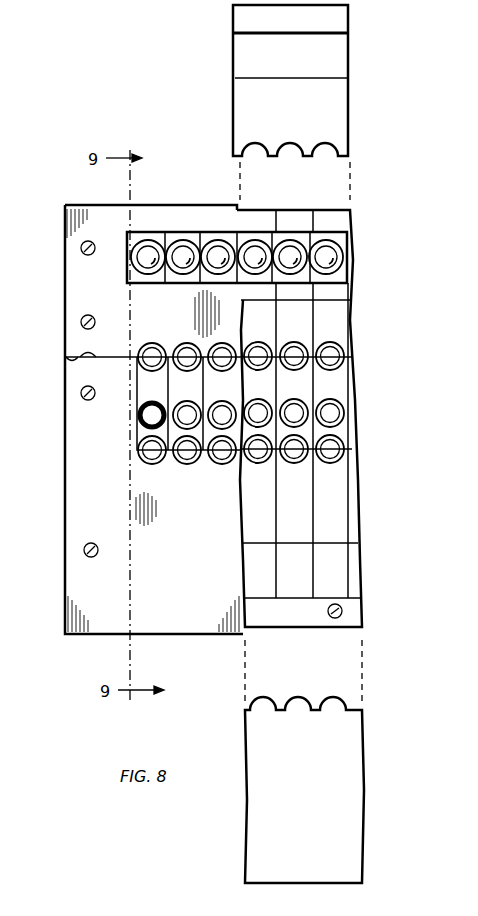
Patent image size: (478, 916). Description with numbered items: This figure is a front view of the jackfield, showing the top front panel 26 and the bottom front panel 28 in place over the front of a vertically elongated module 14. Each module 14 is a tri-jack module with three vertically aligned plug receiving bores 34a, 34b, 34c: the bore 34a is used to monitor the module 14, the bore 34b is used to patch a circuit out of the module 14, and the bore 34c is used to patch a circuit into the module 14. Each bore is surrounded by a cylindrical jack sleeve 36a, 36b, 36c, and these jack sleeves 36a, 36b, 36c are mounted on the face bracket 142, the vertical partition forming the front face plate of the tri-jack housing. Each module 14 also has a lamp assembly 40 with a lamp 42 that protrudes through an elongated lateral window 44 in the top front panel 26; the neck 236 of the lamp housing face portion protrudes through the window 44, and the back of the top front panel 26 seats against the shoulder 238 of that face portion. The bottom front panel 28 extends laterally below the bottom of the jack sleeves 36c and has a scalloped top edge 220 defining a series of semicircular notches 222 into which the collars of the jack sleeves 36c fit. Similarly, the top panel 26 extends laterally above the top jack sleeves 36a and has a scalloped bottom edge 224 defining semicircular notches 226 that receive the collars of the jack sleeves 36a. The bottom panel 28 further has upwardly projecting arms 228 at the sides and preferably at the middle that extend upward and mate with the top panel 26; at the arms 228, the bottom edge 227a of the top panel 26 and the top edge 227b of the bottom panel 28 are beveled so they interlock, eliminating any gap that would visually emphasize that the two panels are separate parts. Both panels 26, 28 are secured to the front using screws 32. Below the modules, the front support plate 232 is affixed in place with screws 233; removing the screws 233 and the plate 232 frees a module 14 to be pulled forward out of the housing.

The module 14 is at (330, 517).
The top front panel 26 is at (333, 97).
The bottom front panel 28 is at (92, 467).
The screws 32 is at (96, 251).
The plug receiving bore 34a is at (332, 358).
The plug receiving bore 34b is at (332, 418).
The plug receiving bore 34c is at (332, 453).
The jack sleeve 36a is at (344, 355).
The jack sleeve 36b is at (345, 410).
The jack sleeve 36c is at (345, 450).
The lamp assembly 40 is at (352, 240).
The lamp 42 is at (185, 248).
The window 44 is at (333, 55).
The face bracket 142 is at (332, 390).
The scalloped top edge 220 is at (318, 714).
The semicircular notches 222 is at (262, 720).
The scalloped bottom edge 224 is at (310, 147).
The semicircular notches 226 is at (327, 143).
The bottom edge of top panel 227a is at (95, 358).
The top edge of bottom panel 227b is at (68, 355).
The upwardly projecting arms 228 is at (86, 422).
The front support plate 232 is at (350, 599).
The screws 233 is at (343, 613).
The neck 236 is at (275, 233).
The shoulder 238 is at (333, 217).